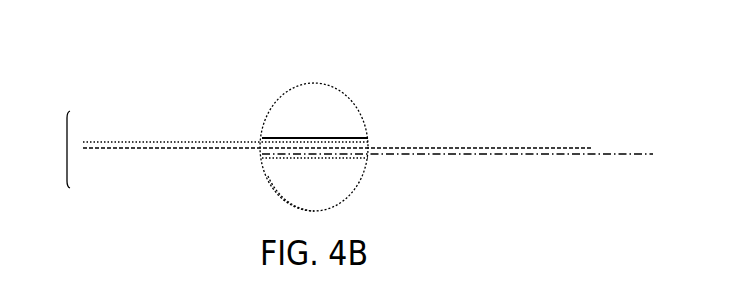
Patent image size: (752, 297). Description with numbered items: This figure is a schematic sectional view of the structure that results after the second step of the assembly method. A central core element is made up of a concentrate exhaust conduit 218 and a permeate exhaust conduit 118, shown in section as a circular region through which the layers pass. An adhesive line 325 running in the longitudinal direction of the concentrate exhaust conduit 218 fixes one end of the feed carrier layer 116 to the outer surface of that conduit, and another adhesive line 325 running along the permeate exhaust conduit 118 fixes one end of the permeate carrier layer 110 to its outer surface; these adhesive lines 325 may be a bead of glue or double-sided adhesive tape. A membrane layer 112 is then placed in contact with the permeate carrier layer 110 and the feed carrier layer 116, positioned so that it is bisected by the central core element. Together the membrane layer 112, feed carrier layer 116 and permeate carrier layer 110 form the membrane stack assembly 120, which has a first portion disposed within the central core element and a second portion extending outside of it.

The permeate carrier layer 110 is at (155, 141).
The membrane layer 112 is at (460, 146).
The feed carrier layer 116 is at (493, 156).
The permeate exhaust conduit 118 is at (330, 95).
The membrane stack assembly 120 is at (49, 149).
The concentrate exhaust conduit 218 is at (267, 176).
The adhesive line 325 is at (370, 137).